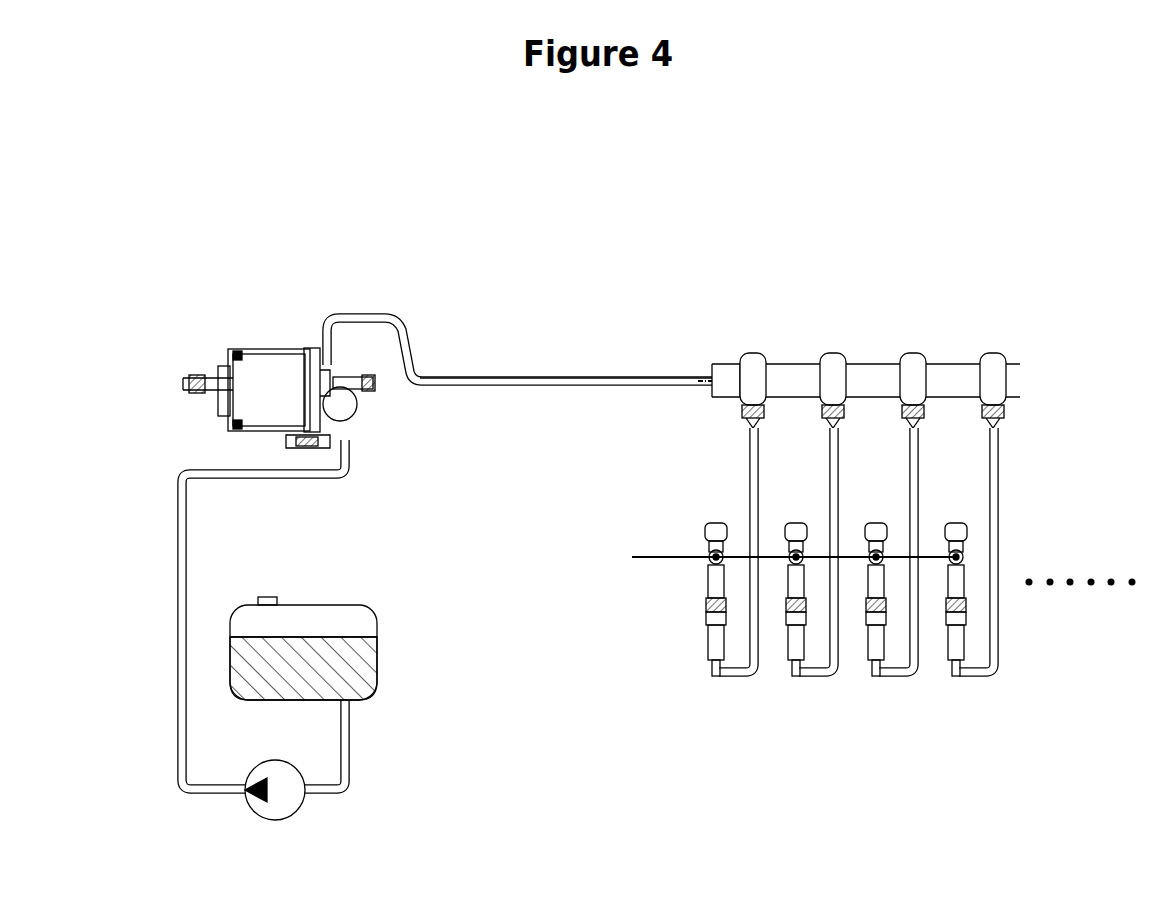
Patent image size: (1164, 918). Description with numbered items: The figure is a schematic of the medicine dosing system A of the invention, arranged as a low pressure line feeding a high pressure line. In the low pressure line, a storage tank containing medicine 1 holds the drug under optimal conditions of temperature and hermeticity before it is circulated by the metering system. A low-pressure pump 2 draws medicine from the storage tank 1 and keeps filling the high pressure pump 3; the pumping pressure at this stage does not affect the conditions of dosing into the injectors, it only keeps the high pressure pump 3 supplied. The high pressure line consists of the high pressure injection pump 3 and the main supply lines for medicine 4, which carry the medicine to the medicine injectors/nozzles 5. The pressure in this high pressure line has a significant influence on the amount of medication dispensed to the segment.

The system A is at (559, 287).
The storage tank containing medicine 1 is at (330, 634).
The low-pressure pump 2 is at (282, 788).
The high pressure pump 3 is at (283, 360).
The supply lines for medicine 4 is at (888, 372).
The medicine injectors/nozzles 5 is at (632, 557).